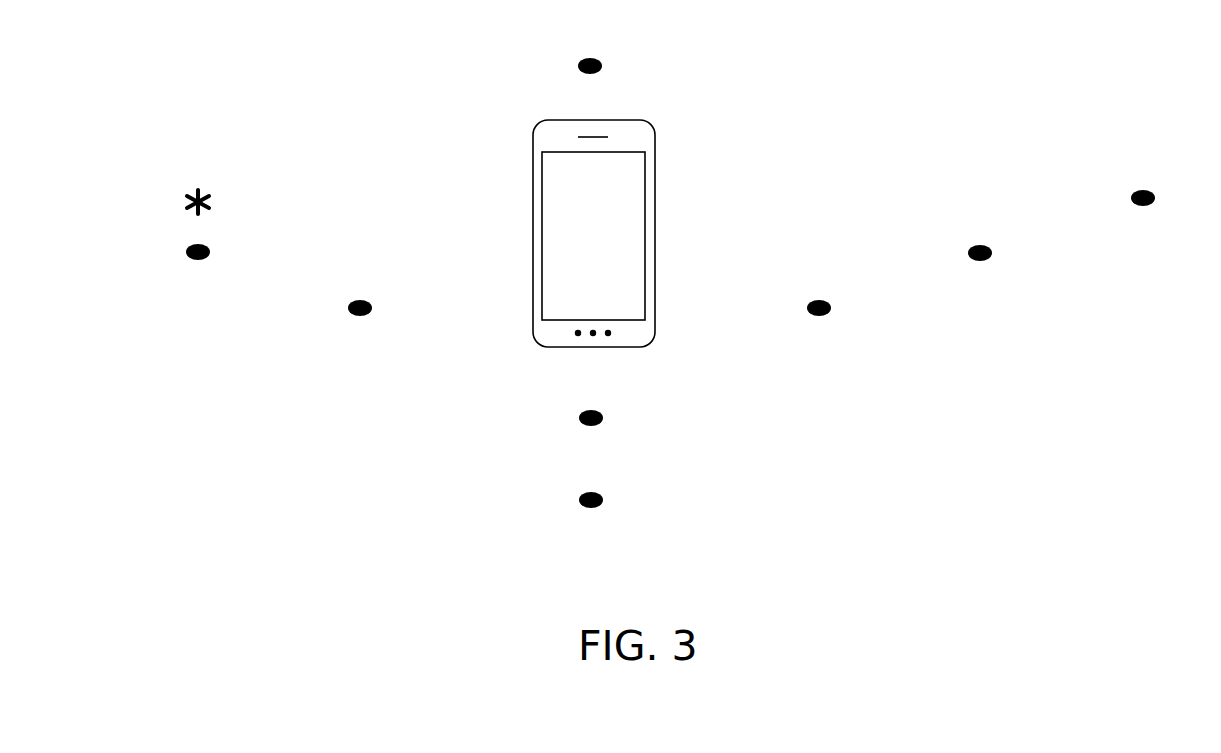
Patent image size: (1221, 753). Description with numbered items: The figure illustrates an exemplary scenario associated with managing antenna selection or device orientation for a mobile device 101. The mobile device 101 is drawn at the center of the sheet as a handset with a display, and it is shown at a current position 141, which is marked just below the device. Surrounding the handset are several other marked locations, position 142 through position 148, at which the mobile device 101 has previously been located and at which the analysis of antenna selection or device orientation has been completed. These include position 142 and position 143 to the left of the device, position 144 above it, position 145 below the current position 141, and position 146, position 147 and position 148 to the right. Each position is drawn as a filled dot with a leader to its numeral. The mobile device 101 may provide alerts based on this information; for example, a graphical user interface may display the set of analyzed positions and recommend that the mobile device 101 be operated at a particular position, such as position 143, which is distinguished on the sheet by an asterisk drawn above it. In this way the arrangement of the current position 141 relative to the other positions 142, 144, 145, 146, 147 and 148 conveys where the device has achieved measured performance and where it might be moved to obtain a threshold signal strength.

The mobile device 101 is at (610, 256).
The current position 141 is at (603, 419).
The position 142 is at (372, 309).
The position 143 is at (210, 252).
The position 144 is at (602, 66).
The position 145 is at (603, 501).
The position 146 is at (831, 309).
The position 147 is at (992, 254).
The position 148 is at (1155, 199).